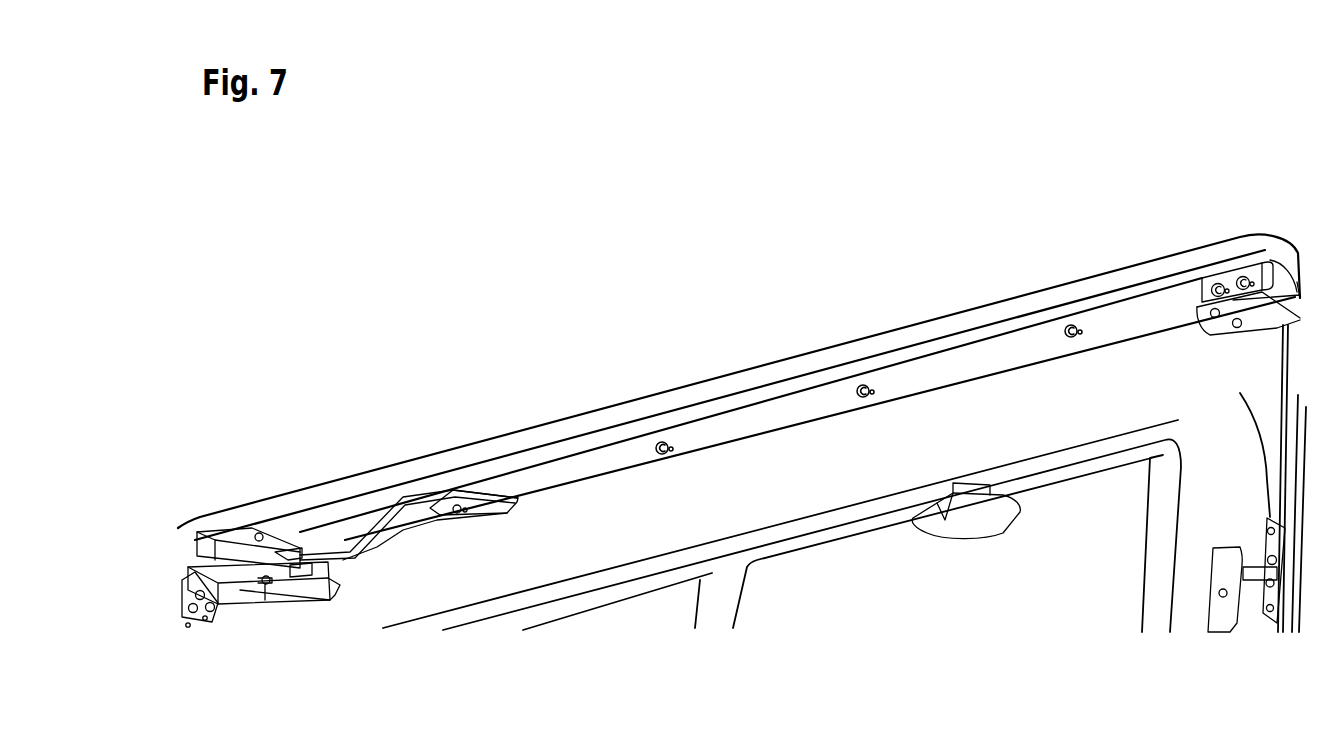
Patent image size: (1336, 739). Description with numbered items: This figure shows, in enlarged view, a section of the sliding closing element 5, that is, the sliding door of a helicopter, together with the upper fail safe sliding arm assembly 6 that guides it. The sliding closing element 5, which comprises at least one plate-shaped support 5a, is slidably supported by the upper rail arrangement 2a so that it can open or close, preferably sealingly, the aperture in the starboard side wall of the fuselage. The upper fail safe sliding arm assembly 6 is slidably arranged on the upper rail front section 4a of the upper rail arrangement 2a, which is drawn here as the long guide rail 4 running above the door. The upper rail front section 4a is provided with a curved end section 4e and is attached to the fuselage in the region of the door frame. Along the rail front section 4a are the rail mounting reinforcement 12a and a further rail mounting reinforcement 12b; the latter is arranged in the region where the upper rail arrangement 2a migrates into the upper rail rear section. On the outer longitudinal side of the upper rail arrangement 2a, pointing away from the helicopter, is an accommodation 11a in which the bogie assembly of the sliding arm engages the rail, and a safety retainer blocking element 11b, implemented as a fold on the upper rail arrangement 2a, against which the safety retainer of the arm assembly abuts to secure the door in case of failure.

The upper rail arrangement 2a is at (818, 364).
The guide rail 4 is at (739, 387).
The upper rail front section 4a is at (740, 428).
The curved end section 4e is at (409, 476).
The sliding closing element 5 is at (383, 617).
The plate-shaped support 5a is at (828, 487).
The upper fail safe sliding arm assembly 6 is at (293, 534).
The accommodation 11a is at (277, 569).
The safety retainer blocking element 11b is at (302, 615).
The rail mounting reinforcement 12a is at (477, 507).
The further rail mounting reinforcement 12b is at (1232, 277).